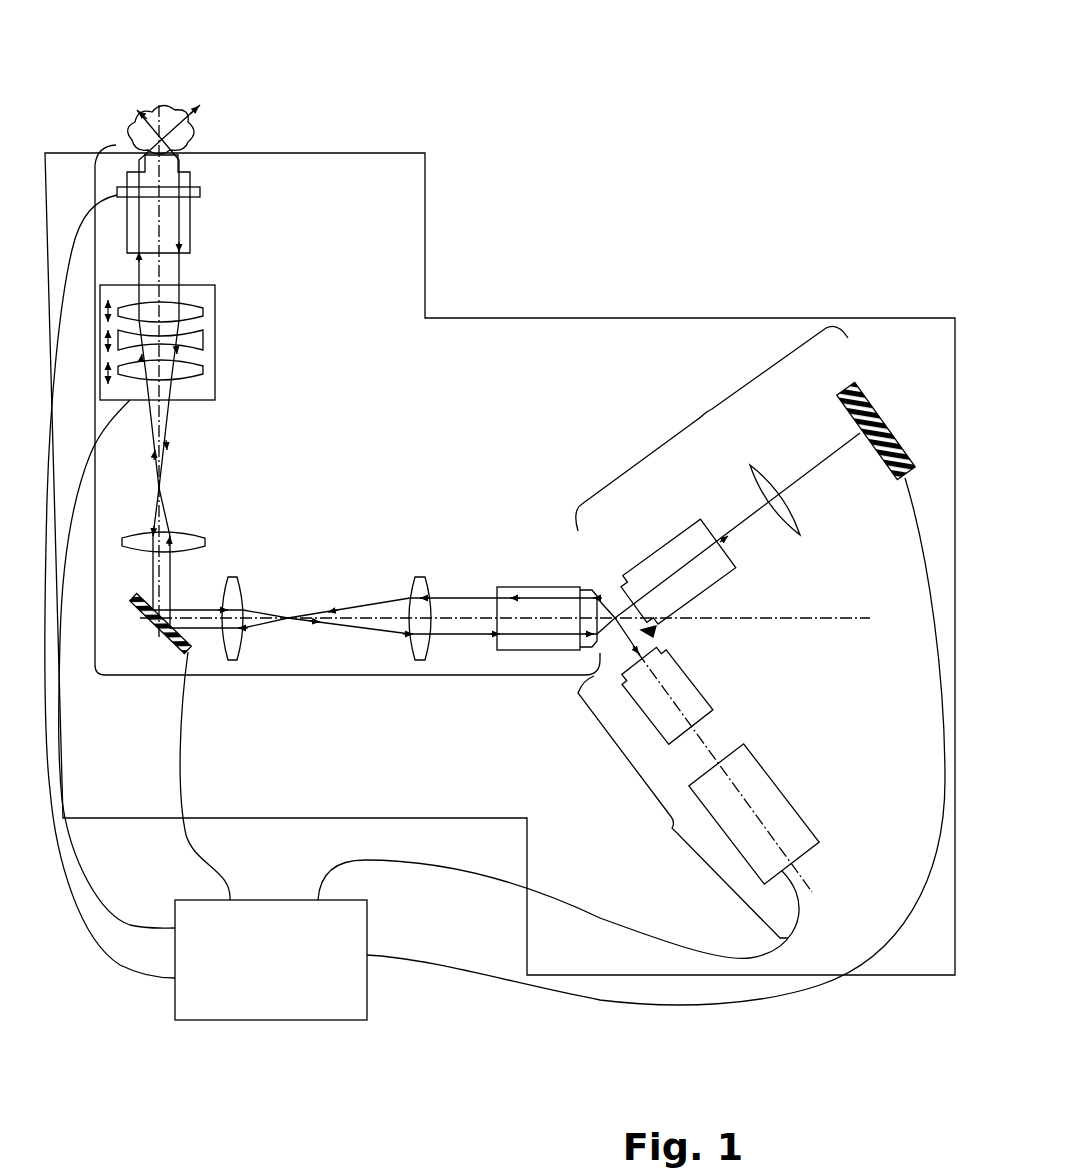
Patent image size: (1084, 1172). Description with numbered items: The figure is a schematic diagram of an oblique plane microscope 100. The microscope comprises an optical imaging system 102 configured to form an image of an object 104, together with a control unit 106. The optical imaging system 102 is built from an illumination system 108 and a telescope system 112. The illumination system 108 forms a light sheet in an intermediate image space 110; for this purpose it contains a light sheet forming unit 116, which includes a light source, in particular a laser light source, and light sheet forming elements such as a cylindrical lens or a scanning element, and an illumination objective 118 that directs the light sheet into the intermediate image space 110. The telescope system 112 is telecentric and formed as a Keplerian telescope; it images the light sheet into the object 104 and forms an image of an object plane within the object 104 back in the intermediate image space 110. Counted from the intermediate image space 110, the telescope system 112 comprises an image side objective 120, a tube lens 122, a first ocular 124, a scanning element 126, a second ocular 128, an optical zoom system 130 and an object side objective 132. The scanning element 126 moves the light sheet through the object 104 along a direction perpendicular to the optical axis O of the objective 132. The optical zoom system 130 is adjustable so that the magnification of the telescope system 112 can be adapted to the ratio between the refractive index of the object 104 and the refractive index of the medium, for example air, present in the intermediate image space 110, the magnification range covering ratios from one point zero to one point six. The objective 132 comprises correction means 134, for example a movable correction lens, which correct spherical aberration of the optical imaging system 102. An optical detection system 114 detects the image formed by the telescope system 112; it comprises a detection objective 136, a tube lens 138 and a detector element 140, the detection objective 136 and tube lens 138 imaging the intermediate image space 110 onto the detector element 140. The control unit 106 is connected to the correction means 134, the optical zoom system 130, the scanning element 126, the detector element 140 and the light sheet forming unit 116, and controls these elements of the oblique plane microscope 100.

The oblique plane microscope 100 is at (702, 84).
The optical imaging system 102 is at (690, 318).
The object 104 is at (195, 130).
The control unit 106 is at (251, 969).
The illumination system 108 is at (670, 827).
The intermediate image space 110 is at (652, 631).
The telescope system 112 is at (332, 678).
The optical detection system 114 is at (703, 416).
The light sheet forming unit 116 is at (786, 780).
The illumination objective 118 is at (706, 707).
The image side objective 120 is at (545, 587).
The tube lens 122 is at (420, 577).
The first ocular 124 is at (243, 582).
The scanning element 126 is at (163, 632).
The second ocular 128 is at (205, 540).
The optical zoom system 130 is at (217, 352).
The object side objective 132 is at (192, 233).
The correction means 134 is at (200, 192).
The detection objective 136 is at (655, 552).
The tube lens 138 is at (756, 472).
The detector element 140 is at (846, 413).
The optical axis O is at (163, 268).